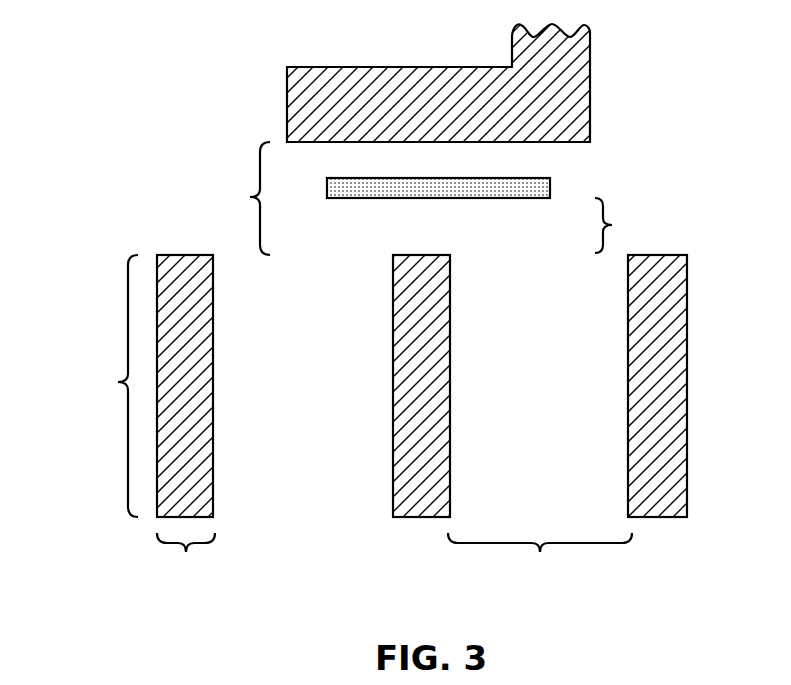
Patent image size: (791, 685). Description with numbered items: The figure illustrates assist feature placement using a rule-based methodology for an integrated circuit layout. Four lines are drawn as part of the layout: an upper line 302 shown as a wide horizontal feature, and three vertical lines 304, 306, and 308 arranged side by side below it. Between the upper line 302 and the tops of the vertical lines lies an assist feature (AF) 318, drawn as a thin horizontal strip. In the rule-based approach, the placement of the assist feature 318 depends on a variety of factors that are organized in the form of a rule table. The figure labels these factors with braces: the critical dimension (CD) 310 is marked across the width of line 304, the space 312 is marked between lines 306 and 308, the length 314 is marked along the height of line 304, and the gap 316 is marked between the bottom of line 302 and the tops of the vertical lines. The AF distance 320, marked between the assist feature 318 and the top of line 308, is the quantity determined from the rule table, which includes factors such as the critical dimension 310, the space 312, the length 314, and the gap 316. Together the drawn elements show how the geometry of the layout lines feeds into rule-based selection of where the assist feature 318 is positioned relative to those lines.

The line 302 is at (395, 270).
The line 304 is at (395, 270).
The line 306 is at (395, 270).
The line 308 is at (395, 270).
The critical dimension (CD) 310 is at (186, 572).
The space 312 is at (540, 572).
The length 314 is at (82, 386).
The gap 316 is at (233, 198).
The assist feature (AF) 318 is at (475, 199).
The AF distance 320 is at (612, 225).